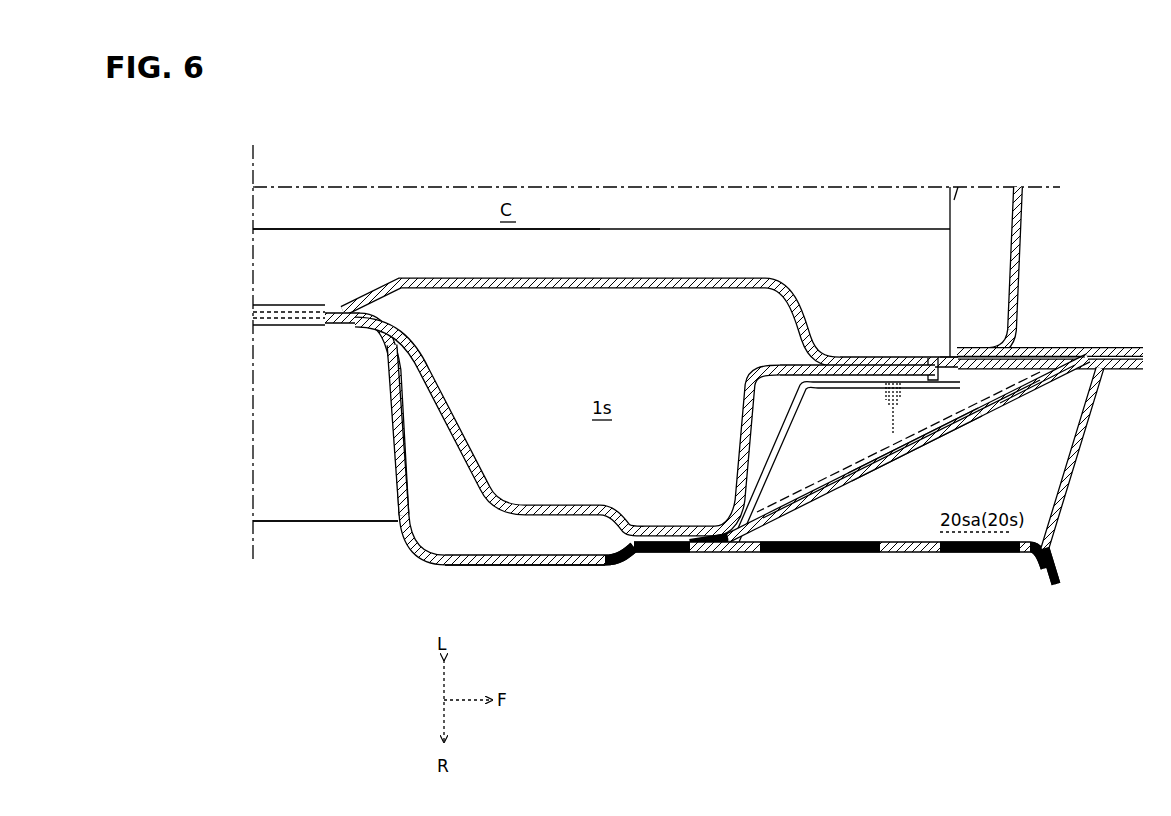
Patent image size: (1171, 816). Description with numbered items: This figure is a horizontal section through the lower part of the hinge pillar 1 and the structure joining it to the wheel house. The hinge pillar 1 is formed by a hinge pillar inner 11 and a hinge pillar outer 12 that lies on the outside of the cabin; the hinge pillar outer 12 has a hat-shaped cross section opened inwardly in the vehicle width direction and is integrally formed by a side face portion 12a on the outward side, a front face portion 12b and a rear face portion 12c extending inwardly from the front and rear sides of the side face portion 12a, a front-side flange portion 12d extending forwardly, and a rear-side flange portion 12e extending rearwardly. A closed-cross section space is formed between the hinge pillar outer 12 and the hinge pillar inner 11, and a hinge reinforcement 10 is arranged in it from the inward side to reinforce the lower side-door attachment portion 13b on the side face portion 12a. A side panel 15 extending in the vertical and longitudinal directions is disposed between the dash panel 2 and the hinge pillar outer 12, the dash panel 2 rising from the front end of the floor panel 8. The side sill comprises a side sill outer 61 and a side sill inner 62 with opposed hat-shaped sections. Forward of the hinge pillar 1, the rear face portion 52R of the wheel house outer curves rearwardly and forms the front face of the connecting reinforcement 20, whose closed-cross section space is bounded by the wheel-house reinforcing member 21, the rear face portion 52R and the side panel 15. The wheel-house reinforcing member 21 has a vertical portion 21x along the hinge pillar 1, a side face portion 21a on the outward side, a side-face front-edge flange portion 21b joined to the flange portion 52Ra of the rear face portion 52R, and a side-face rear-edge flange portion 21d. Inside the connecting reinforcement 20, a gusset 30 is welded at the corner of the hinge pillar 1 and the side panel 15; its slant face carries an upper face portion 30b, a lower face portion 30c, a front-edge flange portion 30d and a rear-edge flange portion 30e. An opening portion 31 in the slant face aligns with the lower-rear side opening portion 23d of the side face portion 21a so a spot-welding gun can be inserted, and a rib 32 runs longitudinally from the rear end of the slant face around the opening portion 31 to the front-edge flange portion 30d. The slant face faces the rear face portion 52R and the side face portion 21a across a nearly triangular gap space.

The hinge pillar 1 is at (528, 567).
The dash panel 2 is at (1016, 240).
The floor panel 8 is at (960, 210).
The hinge reinforcement 10 is at (460, 428).
The hinge pillar inner 11 is at (625, 278).
The hinge pillar outer 12 is at (573, 565).
The side face portion 12a is at (493, 565).
The front face portion 12b is at (786, 444).
The rear face portion 12c is at (394, 430).
The front-side flange portion 12d is at (870, 378).
The rear-side flange portion 12e is at (340, 328).
The lower side-door attachment portion 13b is at (592, 565).
The side panel 15 is at (840, 356).
The connecting reinforcement 20 is at (815, 556).
The wheel-house reinforcing member 21 is at (935, 554).
The side face portion 21a is at (980, 554).
The side-face front-edge flange portion 21b is at (1038, 574).
The side-face rear-edge flange portion 21d is at (668, 553).
The vertical portion 21x is at (795, 553).
The lower-rear side opening portion 23d is at (848, 553).
The gusset 30 is at (913, 460).
The upper face portion 30b is at (940, 444).
The lower face portion 30c is at (948, 358).
The front-edge flange portion 30d is at (1090, 350).
The rear-edge flange portion 30e is at (688, 552).
The opening portion 31 is at (836, 480).
The rib 32 is at (956, 428).
The rear face portion 52R is at (1080, 460).
The flange portion 52Ra is at (1060, 573).
The side sill outer 61 is at (300, 521).
The side sill inner 62 is at (290, 229).